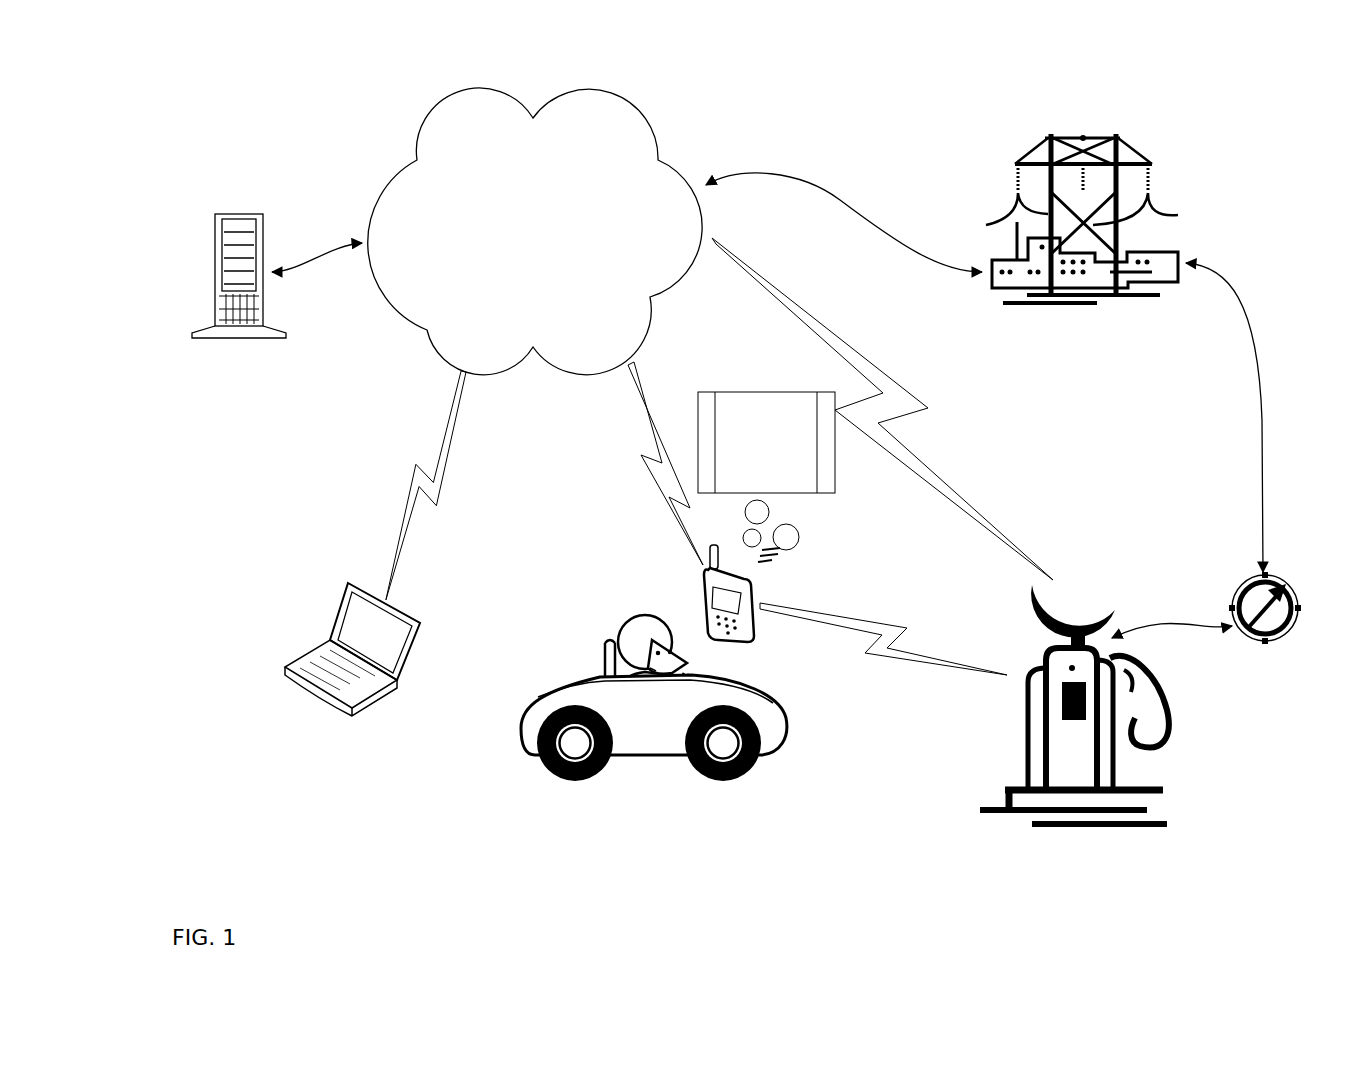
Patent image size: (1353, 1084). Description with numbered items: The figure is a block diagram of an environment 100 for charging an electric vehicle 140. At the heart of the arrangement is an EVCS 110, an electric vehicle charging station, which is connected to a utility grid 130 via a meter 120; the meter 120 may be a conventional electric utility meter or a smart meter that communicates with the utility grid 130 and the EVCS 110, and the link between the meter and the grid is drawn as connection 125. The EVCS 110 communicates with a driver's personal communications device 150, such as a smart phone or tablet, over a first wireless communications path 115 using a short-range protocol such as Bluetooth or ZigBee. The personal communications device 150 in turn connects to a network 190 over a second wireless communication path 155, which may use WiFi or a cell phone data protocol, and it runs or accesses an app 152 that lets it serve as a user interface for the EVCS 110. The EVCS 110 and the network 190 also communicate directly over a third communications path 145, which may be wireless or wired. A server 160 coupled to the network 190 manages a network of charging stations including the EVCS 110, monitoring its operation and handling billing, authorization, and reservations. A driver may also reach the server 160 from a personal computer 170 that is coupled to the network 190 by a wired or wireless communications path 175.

The environment 100 is at (243, 143).
The EVCS 110 is at (1022, 742).
The first wireless communications path 115 is at (868, 620).
The meter 120 is at (1243, 580).
The connection to power utility 125 is at (1262, 432).
The utility grid 130 is at (1095, 303).
The electric vehicle 140 is at (530, 752).
The third communications path 145 is at (955, 490).
The personal communications device 150 is at (700, 595).
The app 152 is at (766, 442).
The second wireless communication path 155 is at (650, 470).
The server 160 is at (235, 338).
The personal computer 170 is at (337, 612).
The communications path 175 is at (415, 468).
The network 190 is at (535, 231).